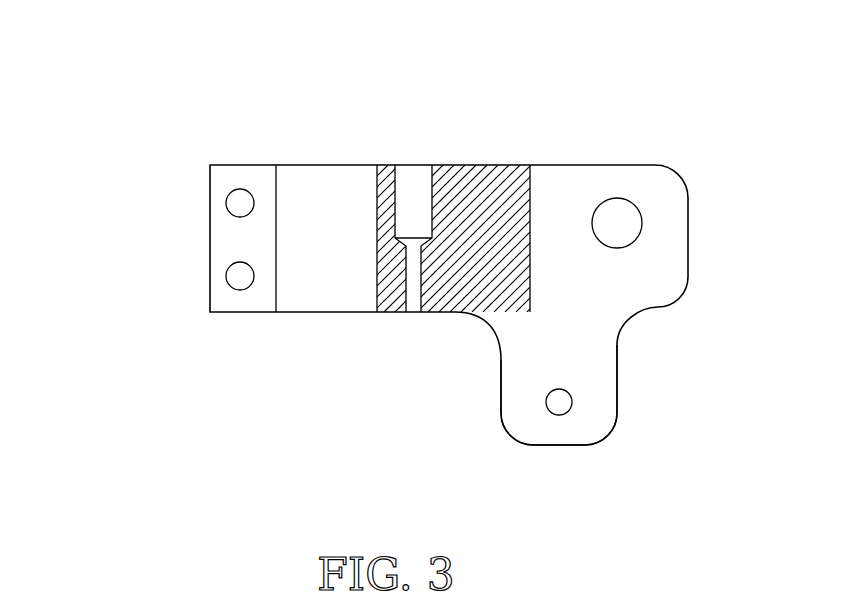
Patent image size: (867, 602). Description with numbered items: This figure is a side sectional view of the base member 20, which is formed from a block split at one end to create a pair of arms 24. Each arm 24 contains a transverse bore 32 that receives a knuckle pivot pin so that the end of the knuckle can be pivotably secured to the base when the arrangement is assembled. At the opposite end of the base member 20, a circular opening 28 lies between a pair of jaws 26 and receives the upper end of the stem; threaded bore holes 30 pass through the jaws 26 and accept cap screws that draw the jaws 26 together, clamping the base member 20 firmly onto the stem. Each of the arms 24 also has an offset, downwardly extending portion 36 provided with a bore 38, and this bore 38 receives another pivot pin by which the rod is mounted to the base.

The base member 20 is at (441, 118).
The arms 24 is at (525, 165).
The jaws 26 is at (241, 165).
The circular opening 28 is at (326, 183).
The threaded bore holes 30 is at (240, 276).
The transverse bore 32 is at (617, 223).
The offset downwardly extending portion 36 is at (575, 445).
The bore 38 is at (559, 402).